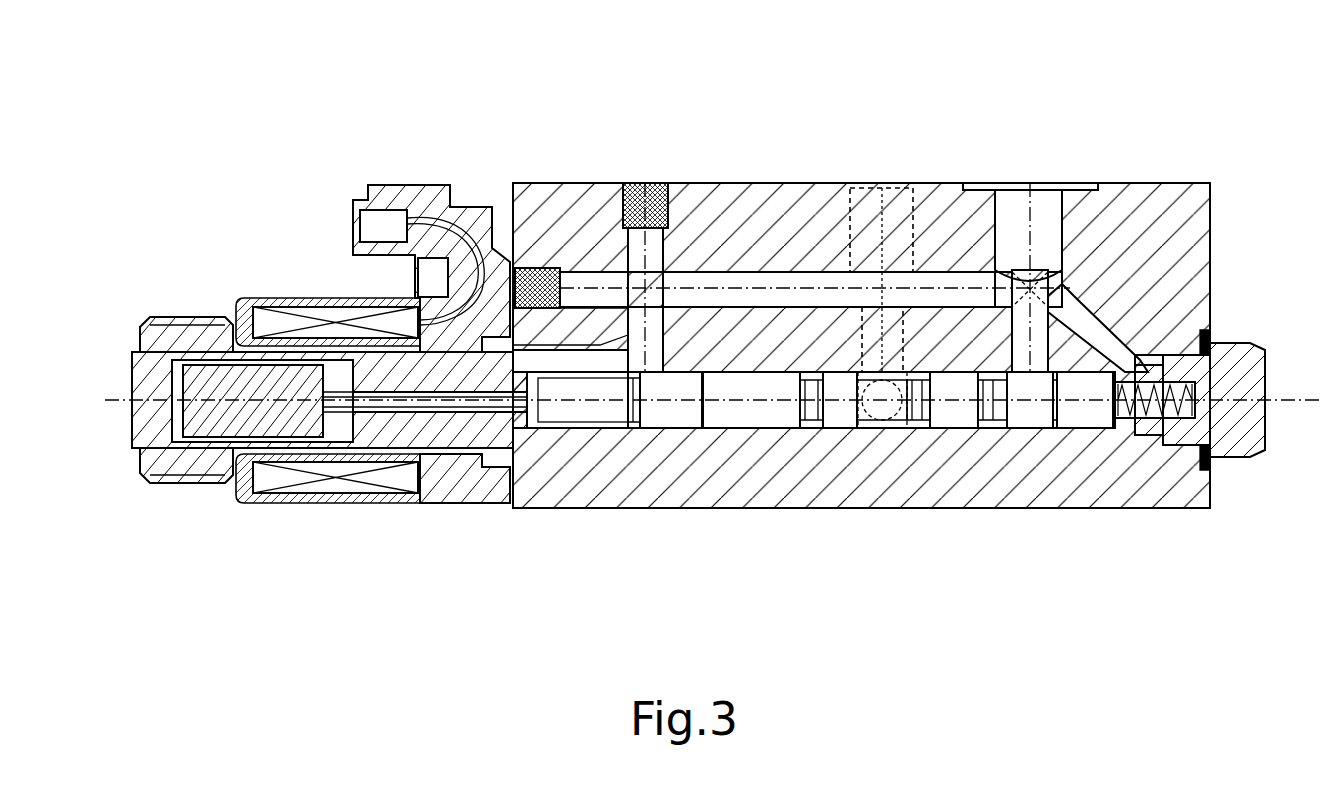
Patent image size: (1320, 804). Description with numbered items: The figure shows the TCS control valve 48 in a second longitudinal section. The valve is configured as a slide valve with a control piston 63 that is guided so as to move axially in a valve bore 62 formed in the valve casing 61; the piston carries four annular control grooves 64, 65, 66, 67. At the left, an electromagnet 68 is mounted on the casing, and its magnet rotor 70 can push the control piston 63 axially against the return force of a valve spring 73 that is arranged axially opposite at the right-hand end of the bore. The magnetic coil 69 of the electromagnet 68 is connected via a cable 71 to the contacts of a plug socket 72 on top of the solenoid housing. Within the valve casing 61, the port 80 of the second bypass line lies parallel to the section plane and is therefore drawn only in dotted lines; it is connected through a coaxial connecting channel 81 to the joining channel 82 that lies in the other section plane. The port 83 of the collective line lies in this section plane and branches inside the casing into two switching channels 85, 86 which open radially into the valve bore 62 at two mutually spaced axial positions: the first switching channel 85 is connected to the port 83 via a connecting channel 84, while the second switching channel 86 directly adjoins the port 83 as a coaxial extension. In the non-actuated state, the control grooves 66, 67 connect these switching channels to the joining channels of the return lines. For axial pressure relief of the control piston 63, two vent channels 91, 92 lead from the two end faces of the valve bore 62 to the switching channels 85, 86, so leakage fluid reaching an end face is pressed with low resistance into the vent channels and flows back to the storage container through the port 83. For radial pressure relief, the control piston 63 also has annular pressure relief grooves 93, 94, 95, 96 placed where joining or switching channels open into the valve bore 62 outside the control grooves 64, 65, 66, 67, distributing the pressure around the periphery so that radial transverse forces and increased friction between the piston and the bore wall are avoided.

The TCS control valve 48 is at (273, 152).
The valve casing 61 is at (1187, 225).
The valve bore 62 is at (1124, 440).
The control piston 63 is at (1088, 412).
The control groove 64 is at (773, 412).
The control groove 65 is at (922, 412).
The control groove 66 is at (680, 408).
The control groove 67 is at (1030, 412).
The electromagnet 68 is at (335, 522).
The magnetic coil 69 is at (338, 318).
The magnet rotor 70 is at (228, 414).
The cable 71 is at (462, 250).
The plug socket 72 is at (392, 185).
The valve spring 73 is at (1150, 445).
The port of the second bypass line 80 is at (870, 232).
The connecting channel 81 is at (897, 330).
The joining channel 82 is at (882, 414).
The port of the collective line 83 is at (1043, 228).
The connecting channel 84 is at (753, 280).
The first switching channel 85 is at (657, 340).
The second switching channel 86 is at (1015, 333).
The vent channel 91 is at (598, 332).
The vent channel 92 is at (1110, 322).
The pressure relief groove 93 is at (812, 412).
The pressure relief groove 94 is at (955, 412).
The pressure relief groove 95 is at (634, 405).
The pressure relief groove 96 is at (994, 412).